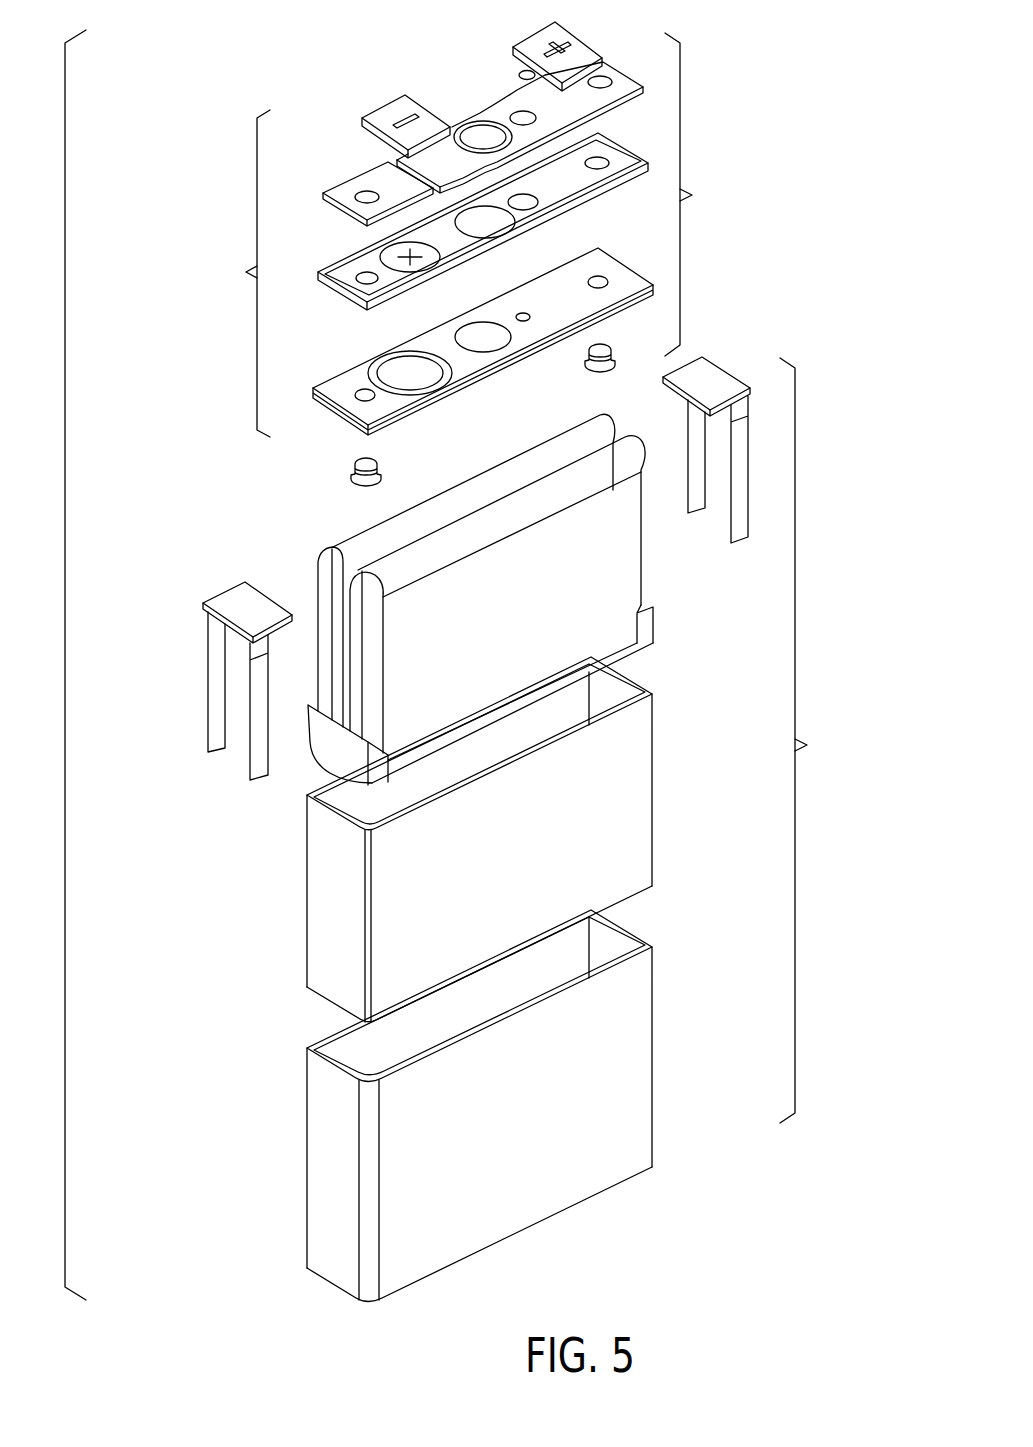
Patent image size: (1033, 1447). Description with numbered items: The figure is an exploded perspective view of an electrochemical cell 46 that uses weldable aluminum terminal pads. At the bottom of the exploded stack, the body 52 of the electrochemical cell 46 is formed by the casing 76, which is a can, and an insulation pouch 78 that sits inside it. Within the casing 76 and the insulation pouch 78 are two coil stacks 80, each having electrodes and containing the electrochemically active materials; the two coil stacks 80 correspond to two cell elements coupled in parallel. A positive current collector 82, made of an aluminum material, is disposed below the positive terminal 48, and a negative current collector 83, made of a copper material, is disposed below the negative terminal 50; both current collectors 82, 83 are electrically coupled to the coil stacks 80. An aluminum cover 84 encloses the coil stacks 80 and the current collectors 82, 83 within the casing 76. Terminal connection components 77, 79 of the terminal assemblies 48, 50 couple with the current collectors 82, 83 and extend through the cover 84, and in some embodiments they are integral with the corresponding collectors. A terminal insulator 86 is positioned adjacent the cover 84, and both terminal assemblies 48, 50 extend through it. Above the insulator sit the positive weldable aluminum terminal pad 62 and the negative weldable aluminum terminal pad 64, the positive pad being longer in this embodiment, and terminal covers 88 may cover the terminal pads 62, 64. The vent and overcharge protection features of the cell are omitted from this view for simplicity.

The electrochemical cell 46 is at (725, 61).
The positive terminal 48 is at (699, 194).
The negative terminal 50 is at (238, 273).
The body 52 is at (812, 740).
The positive weldable aluminum terminal pad 62 is at (628, 98).
The negative weldable aluminum terminal pad 64 is at (353, 177).
The casing 76 is at (673, 1039).
The terminal connection component 77 is at (602, 375).
The insulation pouch 78 is at (262, 888).
The terminal connection component 79 is at (391, 463).
The coil stacks 80 is at (459, 508).
The positive current collector 82 is at (735, 352).
The negative current collector 83 is at (175, 635).
The cover 84 is at (490, 372).
The terminal insulator 86 is at (513, 232).
The terminal covers 88 is at (602, 29).